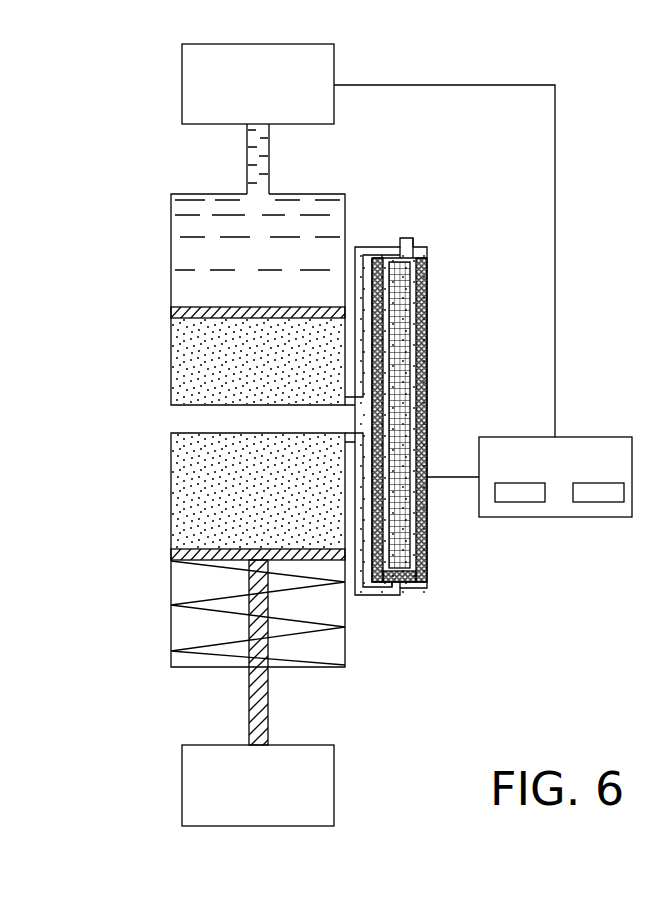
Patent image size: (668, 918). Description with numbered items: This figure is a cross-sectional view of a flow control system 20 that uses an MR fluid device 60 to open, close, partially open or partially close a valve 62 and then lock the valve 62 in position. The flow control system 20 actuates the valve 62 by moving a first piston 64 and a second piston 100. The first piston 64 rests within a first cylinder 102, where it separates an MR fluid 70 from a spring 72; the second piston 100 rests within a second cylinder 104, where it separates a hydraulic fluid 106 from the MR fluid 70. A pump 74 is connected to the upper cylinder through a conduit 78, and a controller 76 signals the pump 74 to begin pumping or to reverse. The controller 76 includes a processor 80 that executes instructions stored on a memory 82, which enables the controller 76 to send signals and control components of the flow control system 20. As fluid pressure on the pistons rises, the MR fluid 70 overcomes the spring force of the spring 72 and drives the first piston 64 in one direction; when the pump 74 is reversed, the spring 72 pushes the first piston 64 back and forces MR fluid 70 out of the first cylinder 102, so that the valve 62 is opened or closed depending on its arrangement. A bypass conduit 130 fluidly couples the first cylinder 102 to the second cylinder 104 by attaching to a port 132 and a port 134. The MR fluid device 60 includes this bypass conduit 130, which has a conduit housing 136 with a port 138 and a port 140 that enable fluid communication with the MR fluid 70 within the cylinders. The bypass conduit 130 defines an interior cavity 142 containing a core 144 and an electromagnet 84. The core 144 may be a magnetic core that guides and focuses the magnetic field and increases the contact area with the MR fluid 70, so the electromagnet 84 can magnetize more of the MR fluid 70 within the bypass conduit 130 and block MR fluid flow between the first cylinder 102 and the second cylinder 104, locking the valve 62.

The flow control system 20 is at (451, 668).
The MR fluid device 60 is at (617, 168).
The valve 62 is at (334, 787).
The first piston 64 is at (171, 554).
The MR fluid 70 is at (186, 373).
The spring 72 is at (305, 632).
The pump 74 is at (182, 88).
The controller 76 is at (555, 518).
The conduit 78 is at (247, 160).
The processor 80 is at (510, 503).
The memory 82 is at (606, 503).
The electromagnet 84 is at (326, 399).
The second piston 100 is at (171, 314).
The first cylinder 102 is at (171, 491).
The second cylinder 104 is at (171, 236).
The hydraulic fluid 106 is at (345, 226).
The bypass conduit 130 is at (491, 213).
The port 132 is at (345, 432).
The port 134 is at (366, 408).
The conduit housing 136 is at (418, 259).
The port 138 is at (404, 246).
The port 140 is at (410, 590).
The interior cavity 142 is at (412, 548).
The core 144 is at (400, 513).